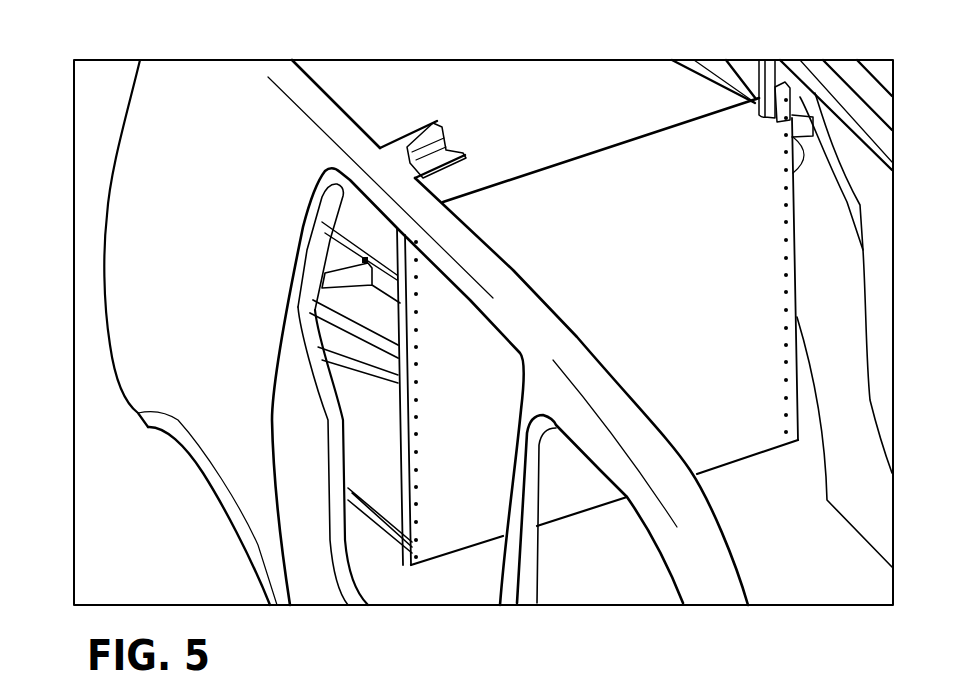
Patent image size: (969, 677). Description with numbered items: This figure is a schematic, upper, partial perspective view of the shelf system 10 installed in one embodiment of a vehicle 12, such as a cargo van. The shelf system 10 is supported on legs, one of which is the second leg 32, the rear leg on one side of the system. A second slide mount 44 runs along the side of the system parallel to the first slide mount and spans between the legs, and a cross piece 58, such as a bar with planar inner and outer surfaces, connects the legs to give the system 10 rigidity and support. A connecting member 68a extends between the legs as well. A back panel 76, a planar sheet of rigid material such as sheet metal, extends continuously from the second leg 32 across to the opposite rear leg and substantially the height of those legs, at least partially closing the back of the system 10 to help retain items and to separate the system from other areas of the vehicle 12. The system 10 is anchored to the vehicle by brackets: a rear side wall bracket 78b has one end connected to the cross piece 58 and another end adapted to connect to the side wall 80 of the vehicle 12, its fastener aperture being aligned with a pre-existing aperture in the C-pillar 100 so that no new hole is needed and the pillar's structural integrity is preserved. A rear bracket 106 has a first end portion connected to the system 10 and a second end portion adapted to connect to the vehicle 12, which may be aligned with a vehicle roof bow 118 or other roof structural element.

The shelf system 10 is at (341, 193).
The vehicle 12 is at (843, 63).
The second leg 32 is at (408, 515).
The second slide mount 44 is at (377, 353).
The cross piece 58 is at (392, 288).
The connecting member 68a is at (377, 530).
The back panel 76 is at (724, 352).
The rear side wall bracket 78b is at (331, 268).
The side wall 80 is at (122, 213).
The C-pillar 100 is at (276, 403).
The rear bracket 106 is at (767, 107).
The vehicle roof bow 118 is at (457, 168).